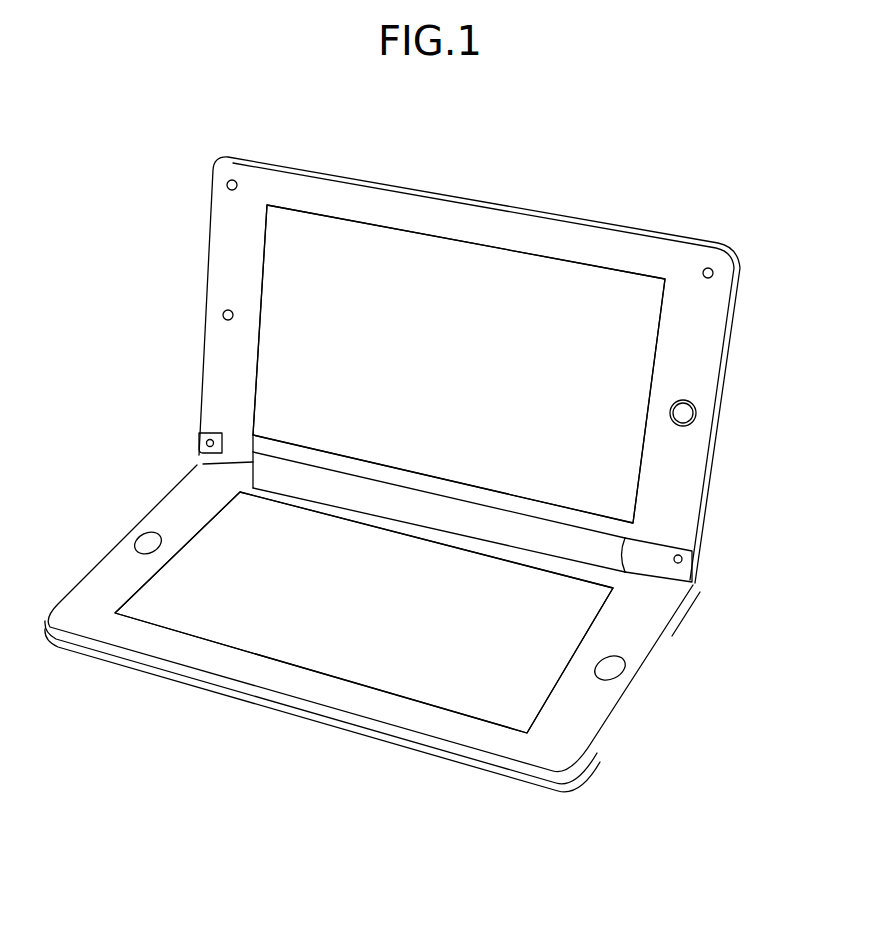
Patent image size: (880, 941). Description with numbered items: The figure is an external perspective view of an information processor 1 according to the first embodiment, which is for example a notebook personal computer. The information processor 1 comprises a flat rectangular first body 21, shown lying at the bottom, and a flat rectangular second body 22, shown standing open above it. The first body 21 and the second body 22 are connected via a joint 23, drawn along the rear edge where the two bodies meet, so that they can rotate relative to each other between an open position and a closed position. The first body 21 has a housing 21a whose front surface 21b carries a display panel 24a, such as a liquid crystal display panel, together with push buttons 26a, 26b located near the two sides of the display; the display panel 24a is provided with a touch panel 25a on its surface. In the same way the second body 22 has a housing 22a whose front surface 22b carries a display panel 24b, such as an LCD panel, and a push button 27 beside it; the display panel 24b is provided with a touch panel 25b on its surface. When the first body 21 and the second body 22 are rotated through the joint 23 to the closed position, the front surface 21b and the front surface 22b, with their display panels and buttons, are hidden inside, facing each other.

The information processor 1 is at (648, 189).
The first body 21 is at (76, 576).
The housing 21a is at (553, 790).
The front surface 21b is at (438, 722).
The second body 22 is at (209, 254).
The housing 22a is at (736, 300).
The front surface 22b is at (708, 352).
The joint 23 is at (253, 461).
The display panel 24a is at (210, 642).
The display panel 24b is at (361, 221).
The touch panel 25a is at (325, 653).
The touch panel 25b is at (462, 268).
The push button 26a is at (145, 540).
The push button 26b is at (622, 668).
The push button 27 is at (690, 413).